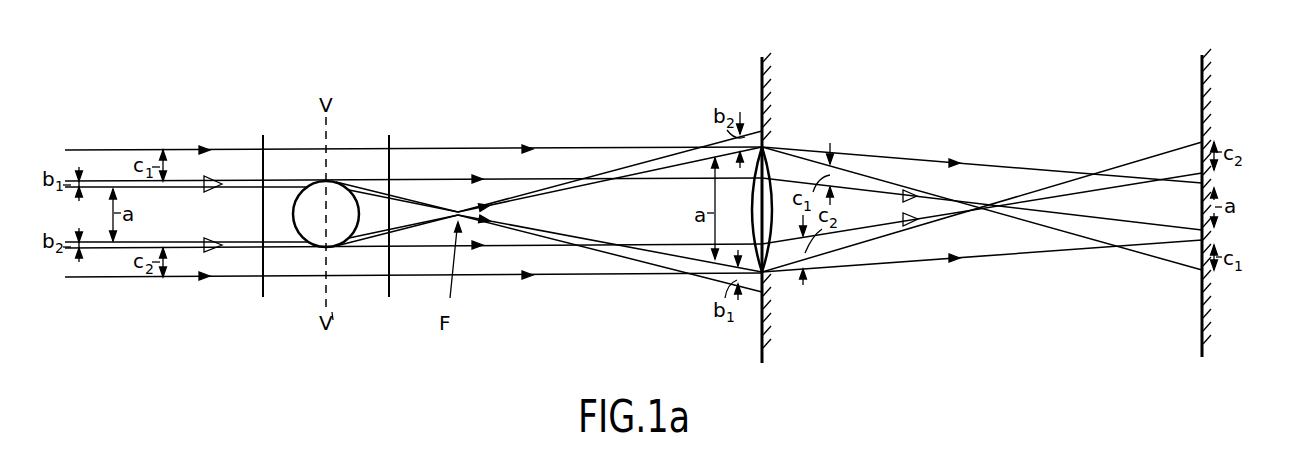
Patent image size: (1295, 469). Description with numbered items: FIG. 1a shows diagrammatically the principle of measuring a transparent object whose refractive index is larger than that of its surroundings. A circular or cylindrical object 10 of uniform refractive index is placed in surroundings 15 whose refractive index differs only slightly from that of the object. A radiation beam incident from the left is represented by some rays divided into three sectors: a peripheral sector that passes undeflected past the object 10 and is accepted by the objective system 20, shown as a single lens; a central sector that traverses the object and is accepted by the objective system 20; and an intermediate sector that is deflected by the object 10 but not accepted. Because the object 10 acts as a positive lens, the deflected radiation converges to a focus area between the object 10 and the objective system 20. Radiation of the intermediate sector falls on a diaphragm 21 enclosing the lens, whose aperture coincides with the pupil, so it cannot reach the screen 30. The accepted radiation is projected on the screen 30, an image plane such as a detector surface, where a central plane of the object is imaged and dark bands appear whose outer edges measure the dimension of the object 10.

The object 10 is at (312, 230).
The surroundings 15 is at (288, 142).
The objective system 20 is at (764, 197).
The diaphragm 21 is at (768, 62).
The screen 30 is at (1203, 70).